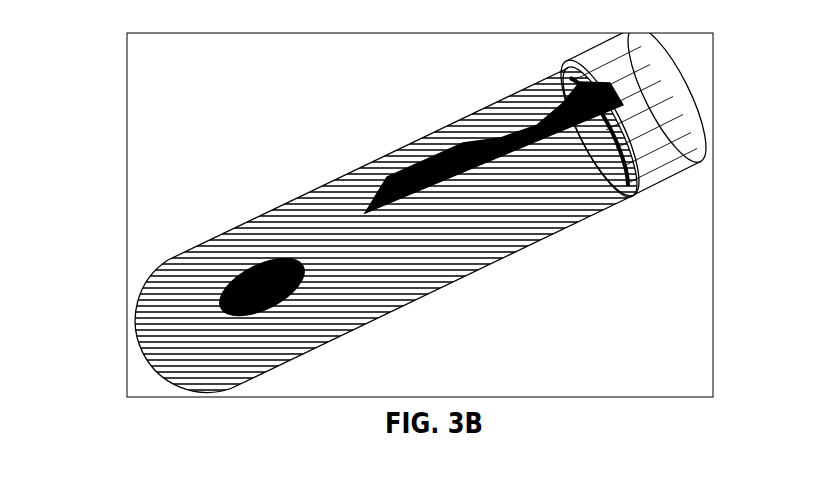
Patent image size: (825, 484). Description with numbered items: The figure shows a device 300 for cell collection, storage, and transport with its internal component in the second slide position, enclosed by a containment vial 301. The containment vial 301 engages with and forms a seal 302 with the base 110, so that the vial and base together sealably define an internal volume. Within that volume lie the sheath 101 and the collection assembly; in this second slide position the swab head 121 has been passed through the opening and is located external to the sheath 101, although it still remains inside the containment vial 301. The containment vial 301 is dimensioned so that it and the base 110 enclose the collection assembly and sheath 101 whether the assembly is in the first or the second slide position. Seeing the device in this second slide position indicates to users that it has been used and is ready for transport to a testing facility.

The device for cell collection, storage, and transport 300 is at (391, 215).
The containment vial 301 is at (240, 227).
The sheath 101 is at (383, 178).
The swab head 121 is at (262, 293).
The seal 302 is at (598, 82).
The base 110 is at (688, 137).